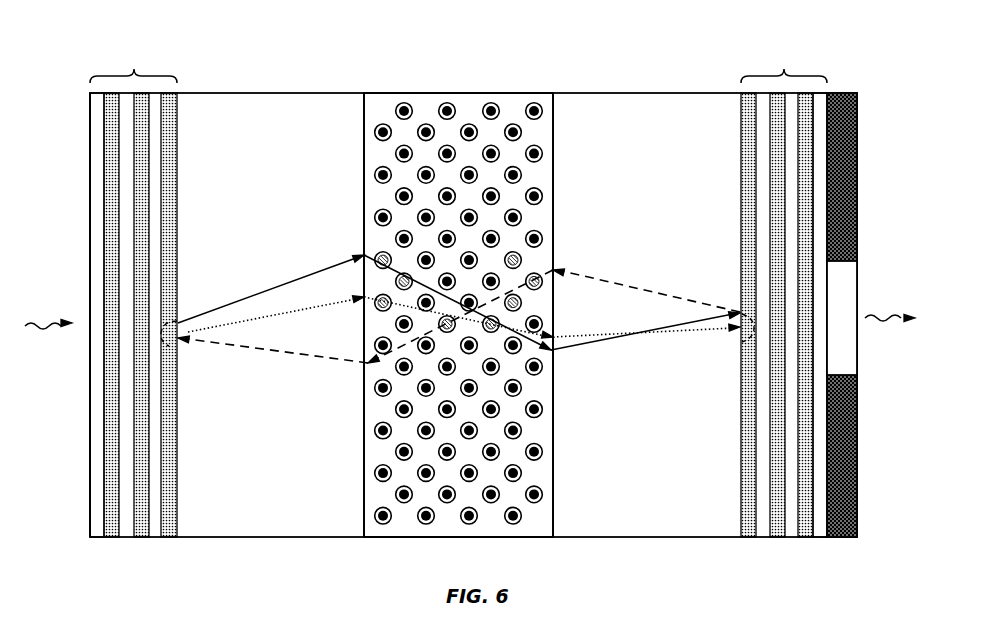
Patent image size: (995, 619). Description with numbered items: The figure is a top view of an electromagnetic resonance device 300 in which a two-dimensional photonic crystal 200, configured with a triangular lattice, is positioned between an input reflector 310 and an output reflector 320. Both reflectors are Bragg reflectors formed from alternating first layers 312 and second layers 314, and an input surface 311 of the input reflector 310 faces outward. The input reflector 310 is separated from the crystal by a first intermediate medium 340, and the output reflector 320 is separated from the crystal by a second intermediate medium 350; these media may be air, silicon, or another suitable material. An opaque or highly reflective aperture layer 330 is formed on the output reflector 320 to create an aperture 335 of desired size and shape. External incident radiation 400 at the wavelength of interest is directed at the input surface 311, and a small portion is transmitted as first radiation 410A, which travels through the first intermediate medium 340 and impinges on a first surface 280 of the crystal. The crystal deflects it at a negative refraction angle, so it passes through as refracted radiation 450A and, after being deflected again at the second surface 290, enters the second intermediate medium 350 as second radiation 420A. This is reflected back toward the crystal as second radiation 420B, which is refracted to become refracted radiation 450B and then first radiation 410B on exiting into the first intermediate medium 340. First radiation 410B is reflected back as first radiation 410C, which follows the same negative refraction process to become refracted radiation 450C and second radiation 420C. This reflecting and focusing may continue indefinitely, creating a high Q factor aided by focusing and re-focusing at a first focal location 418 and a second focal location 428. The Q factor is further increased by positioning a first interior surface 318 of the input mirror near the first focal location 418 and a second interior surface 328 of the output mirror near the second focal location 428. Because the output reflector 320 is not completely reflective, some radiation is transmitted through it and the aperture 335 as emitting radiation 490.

The electromagnetic resonance device 300 is at (68, 61).
The input reflector 310 is at (140, 72).
The output reflector 320 is at (809, 72).
The aperture layer 330 is at (843, 94).
The aperture 335 is at (845, 290).
The first intermediate medium 340 is at (283, 93).
The second intermediate medium 350 is at (627, 93).
The 2D photonic crystal 200 is at (468, 93).
The first surface 280 is at (362, 489).
The second surface 290 is at (555, 489).
The input surface 311 is at (88, 481).
The first layers 312 is at (97, 537).
The second layers 314 is at (109, 537).
The first interior surface 318 is at (180, 479).
The second interior surface 328 is at (740, 484).
The external incident radiation 400 is at (50, 322).
The first radiation 410A is at (263, 284).
The first radiation 410B is at (270, 353).
The first radiation 410C is at (266, 318).
The first focal location 418 is at (186, 347).
The second radiation 420A is at (575, 347).
The second radiation 420B is at (652, 290).
The second radiation 420C is at (590, 333).
The second focal location 428 is at (733, 341).
The refracted radiation 450A is at (376, 262).
The refracted radiation 450B is at (544, 272).
The refracted radiation 450C is at (366, 296).
The emitting radiation 490 is at (873, 322).